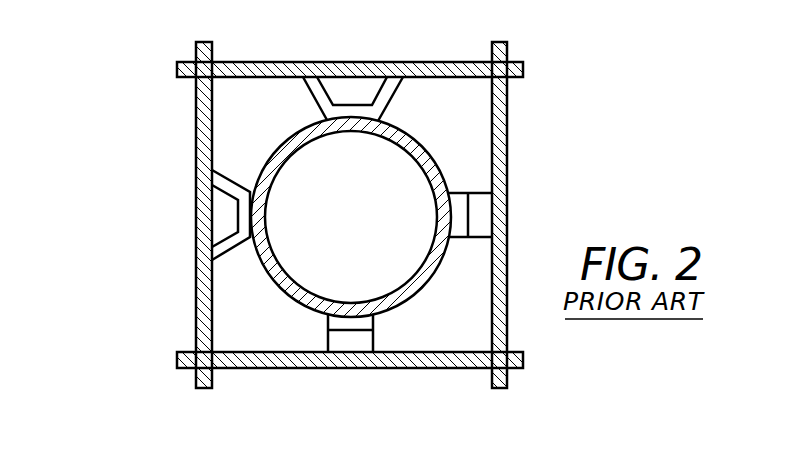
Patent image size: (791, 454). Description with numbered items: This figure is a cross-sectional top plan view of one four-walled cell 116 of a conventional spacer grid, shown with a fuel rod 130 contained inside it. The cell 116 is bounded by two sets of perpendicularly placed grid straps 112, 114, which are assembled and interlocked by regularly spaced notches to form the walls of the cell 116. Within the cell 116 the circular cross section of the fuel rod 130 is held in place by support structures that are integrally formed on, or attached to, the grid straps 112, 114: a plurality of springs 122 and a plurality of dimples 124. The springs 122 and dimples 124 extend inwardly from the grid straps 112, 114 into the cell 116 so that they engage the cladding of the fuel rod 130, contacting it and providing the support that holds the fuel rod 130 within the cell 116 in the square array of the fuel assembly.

The grid strap 112 is at (438, 62).
The grid strap 114 is at (508, 127).
The four-walled cell 116 is at (156, 300).
The spring 122 is at (363, 92).
The dimple 124 is at (472, 228).
The fuel rod 130 is at (270, 150).